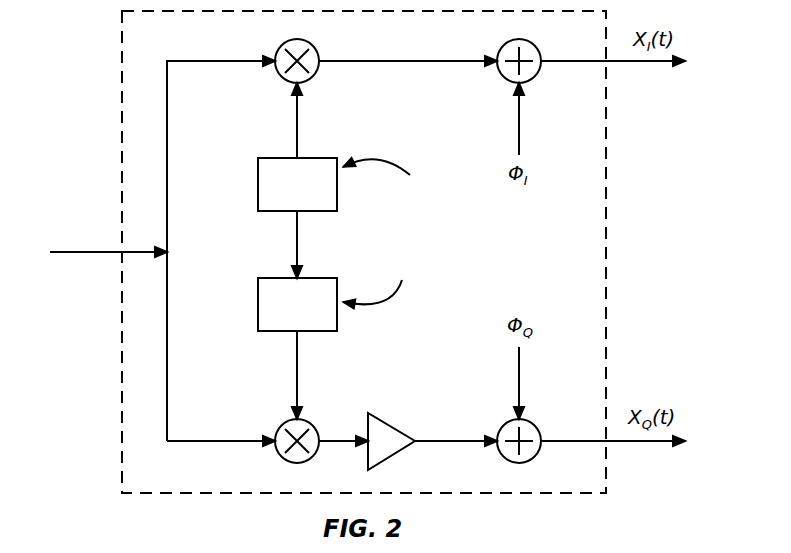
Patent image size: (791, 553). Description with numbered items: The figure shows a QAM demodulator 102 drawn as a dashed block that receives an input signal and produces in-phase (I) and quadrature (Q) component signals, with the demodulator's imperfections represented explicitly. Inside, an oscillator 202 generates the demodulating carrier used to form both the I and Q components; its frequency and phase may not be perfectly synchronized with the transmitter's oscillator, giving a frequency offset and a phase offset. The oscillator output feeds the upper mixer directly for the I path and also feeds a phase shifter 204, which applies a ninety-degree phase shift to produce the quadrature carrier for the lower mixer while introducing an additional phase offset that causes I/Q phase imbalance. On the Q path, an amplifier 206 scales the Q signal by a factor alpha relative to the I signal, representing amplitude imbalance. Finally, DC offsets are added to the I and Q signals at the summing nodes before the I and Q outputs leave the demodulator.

The QAM demodulator 102 is at (122, 75).
The oscillator 202 is at (277, 197).
The phase shifter 204 is at (277, 317).
The amplifier 206 is at (393, 425).